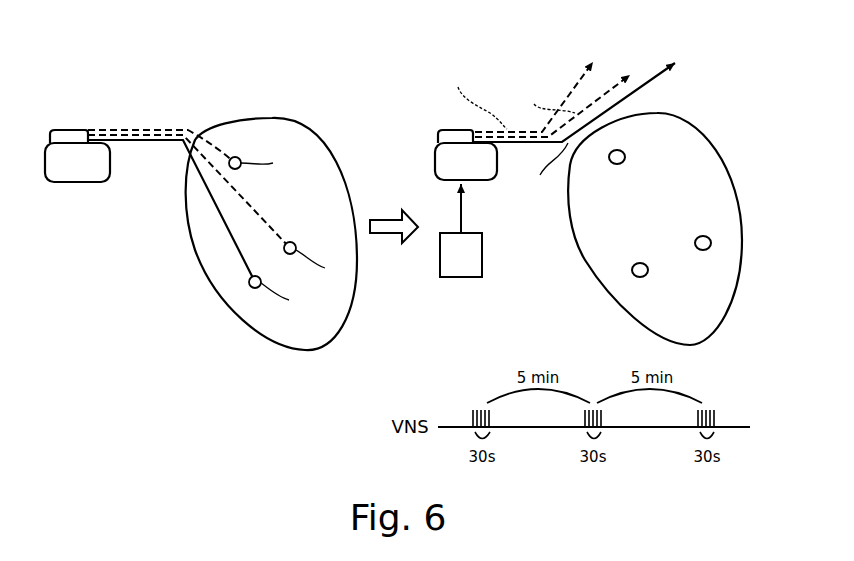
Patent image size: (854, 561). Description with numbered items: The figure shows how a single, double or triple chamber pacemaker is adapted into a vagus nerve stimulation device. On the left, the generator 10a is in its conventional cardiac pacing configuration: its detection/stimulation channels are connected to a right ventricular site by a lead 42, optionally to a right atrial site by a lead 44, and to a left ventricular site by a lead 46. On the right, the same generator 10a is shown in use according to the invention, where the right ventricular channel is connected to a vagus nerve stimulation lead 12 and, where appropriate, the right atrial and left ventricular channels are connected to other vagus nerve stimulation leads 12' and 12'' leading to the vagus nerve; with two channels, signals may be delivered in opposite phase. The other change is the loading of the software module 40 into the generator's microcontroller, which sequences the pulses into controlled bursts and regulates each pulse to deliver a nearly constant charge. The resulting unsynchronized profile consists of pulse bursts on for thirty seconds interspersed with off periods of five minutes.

The generator 10a is at (75, 178).
The lead 42 is at (230, 236).
The lead 44 is at (222, 146).
The lead 46 is at (255, 212).
The VNS lead 12 is at (595, 124).
The VNS lead 12' is at (567, 75).
The VNS lead 12'' is at (520, 85).
The software module 40 is at (470, 277).